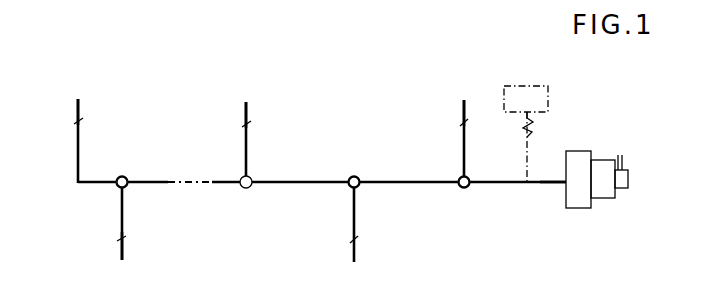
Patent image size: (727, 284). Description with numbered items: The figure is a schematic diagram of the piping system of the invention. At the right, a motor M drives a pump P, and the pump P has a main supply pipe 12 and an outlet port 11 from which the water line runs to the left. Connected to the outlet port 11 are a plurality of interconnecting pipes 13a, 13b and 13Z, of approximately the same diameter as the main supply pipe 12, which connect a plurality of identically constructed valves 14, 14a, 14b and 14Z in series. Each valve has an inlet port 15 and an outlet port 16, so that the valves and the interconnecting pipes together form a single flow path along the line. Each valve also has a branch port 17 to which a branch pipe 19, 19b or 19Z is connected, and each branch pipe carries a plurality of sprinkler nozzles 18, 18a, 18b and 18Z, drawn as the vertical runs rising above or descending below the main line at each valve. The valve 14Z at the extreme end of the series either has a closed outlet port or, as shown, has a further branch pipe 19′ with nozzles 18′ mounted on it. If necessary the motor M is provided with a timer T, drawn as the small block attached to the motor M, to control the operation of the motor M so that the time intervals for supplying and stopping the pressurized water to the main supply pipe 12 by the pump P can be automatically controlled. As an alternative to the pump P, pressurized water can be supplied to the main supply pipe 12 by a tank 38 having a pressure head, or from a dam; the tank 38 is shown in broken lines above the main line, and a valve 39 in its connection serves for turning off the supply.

The outlet port 11 is at (556, 184).
The main supply pipe 12 is at (503, 185).
The interconnecting pipe 13a is at (382, 185).
The interconnecting pipe 13b is at (276, 185).
The interconnecting pipe 13Z is at (147, 181).
The valve 14 is at (464, 188).
The valve 14a is at (354, 175).
The valve 14b is at (246, 188).
The valve 14Z is at (121, 175).
The inlet port 15 is at (360, 178).
The outlet port 16 is at (116, 186).
The branch port 17 is at (350, 187).
The sprinkler nozzle 18 is at (463, 123).
The sprinkler nozzle 18a is at (354, 237).
The sprinkler nozzle 18b is at (247, 125).
The sprinkler nozzle 18Z is at (122, 238).
The sprinkler nozzle 18′ is at (78, 122).
The branch pipe 19 is at (463, 141).
The branch pipe 19b is at (245, 146).
The branch pipe 19Z is at (124, 217).
The branch pipe 19′ is at (77, 143).
The tank 38 is at (540, 96).
The valve 39 is at (538, 127).
The pump P is at (578, 179).
The motor M is at (603, 179).
The timer T is at (626, 186).